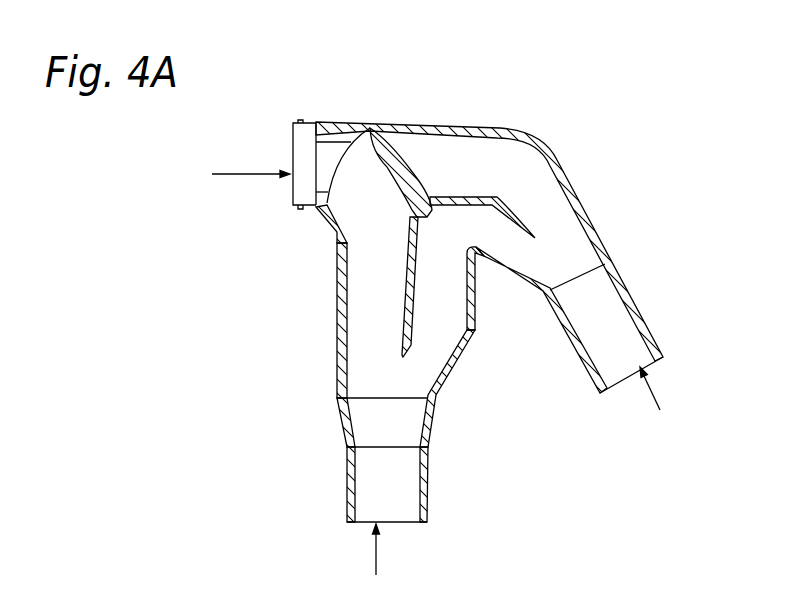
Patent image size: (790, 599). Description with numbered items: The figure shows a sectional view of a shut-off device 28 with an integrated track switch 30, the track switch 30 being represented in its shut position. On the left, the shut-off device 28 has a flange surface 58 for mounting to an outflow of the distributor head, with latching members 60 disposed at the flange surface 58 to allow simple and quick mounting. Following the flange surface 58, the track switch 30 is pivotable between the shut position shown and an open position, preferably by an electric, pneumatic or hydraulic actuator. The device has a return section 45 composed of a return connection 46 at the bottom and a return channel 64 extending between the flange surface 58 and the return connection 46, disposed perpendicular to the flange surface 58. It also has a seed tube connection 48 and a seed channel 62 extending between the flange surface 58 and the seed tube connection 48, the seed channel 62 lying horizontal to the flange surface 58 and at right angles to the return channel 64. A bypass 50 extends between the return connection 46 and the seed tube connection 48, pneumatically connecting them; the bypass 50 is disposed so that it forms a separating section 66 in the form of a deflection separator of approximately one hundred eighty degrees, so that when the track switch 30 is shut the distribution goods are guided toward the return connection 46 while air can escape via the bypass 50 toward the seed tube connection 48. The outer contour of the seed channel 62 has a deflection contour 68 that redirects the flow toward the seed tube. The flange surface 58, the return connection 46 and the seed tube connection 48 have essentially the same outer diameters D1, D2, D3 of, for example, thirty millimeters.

The shut-off device 28 is at (535, 82).
The track switch 30 is at (399, 146).
The return section 45 is at (307, 234).
The return connection 46 is at (377, 497).
The seed tube connection 48 is at (601, 344).
The bypass 50 is at (429, 299).
The flange surface 58 is at (300, 176).
The latching members 60 is at (291, 114).
The seed channel 62 is at (451, 172).
The return channel 64 is at (369, 262).
The separating section 66 is at (402, 379).
The deflection contour 68 is at (576, 154).
The outer diameter of the flange surface D1 is at (236, 175).
The outer diameter of the return connection D2 is at (389, 549).
The outer diameter of the seed tube connection D3 is at (658, 408).